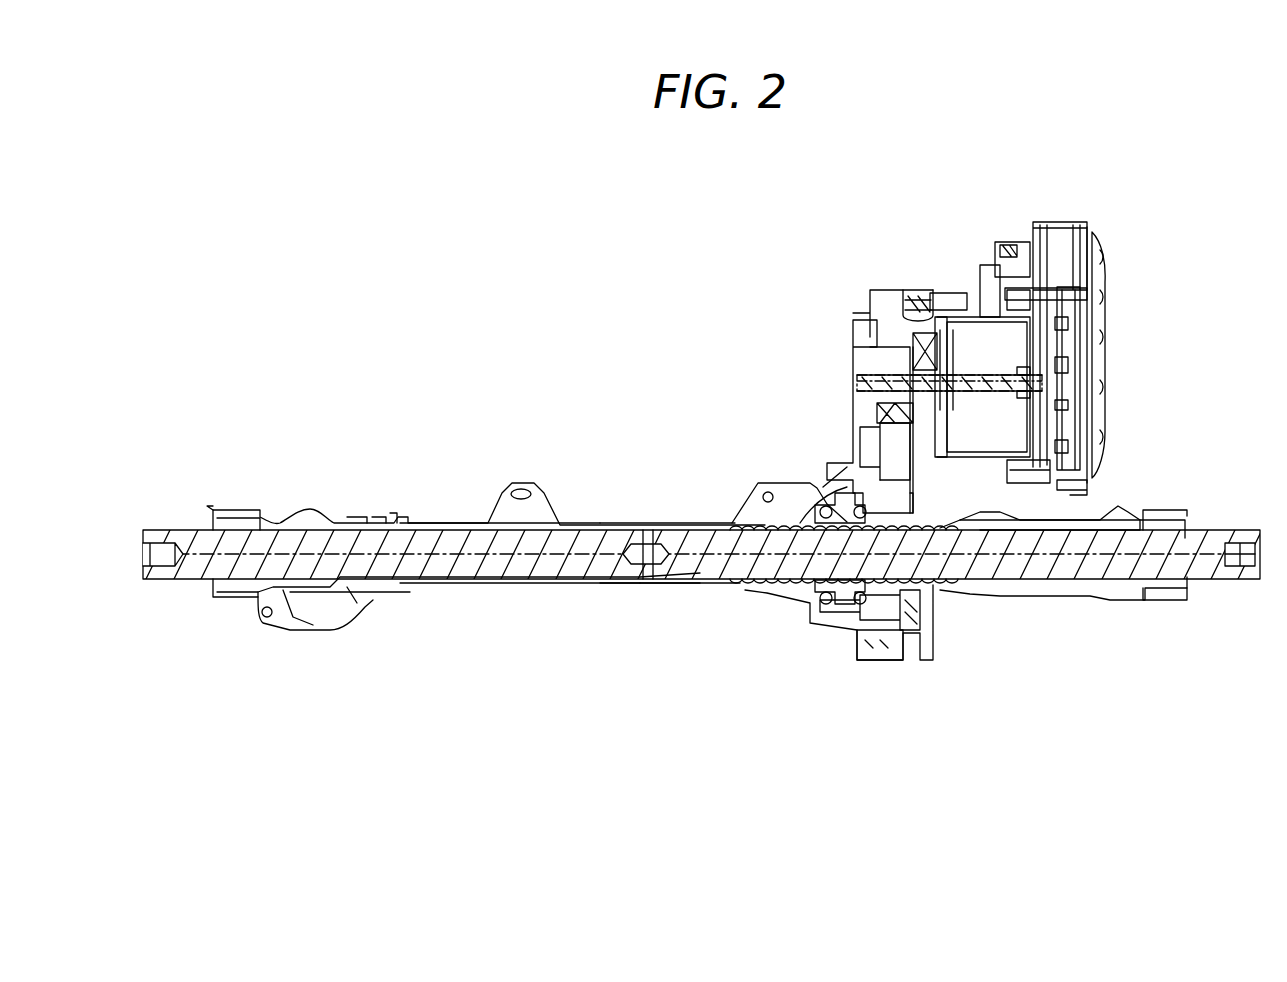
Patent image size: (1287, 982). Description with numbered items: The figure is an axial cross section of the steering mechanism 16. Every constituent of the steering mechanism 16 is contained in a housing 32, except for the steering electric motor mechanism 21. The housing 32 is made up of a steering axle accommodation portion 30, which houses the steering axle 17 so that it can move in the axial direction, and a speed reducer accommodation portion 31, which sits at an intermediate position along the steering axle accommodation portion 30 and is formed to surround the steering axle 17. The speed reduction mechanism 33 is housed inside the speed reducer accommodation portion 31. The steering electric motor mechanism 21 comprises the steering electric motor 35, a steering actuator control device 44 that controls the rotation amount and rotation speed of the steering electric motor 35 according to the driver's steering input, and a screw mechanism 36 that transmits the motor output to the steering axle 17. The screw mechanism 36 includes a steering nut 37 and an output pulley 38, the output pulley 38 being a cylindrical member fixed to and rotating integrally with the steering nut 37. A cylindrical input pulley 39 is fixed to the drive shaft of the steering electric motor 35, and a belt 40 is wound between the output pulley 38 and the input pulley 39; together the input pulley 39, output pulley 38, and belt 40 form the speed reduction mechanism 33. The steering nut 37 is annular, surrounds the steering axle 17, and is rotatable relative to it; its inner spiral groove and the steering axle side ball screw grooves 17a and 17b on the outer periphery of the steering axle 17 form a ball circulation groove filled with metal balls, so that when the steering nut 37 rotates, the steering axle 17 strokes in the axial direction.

The steering mechanism 16 is at (684, 452).
The steering axle 17 is at (449, 532).
The steering axle side ball screw groove 17a is at (739, 577).
The steering axle side ball screw groove 17b is at (992, 577).
The steering electric motor mechanism 21 is at (1107, 232).
The steering axle accommodation portion 30 is at (576, 532).
The speed reducer accommodation portion 31 is at (880, 294).
The housing 32 is at (621, 528).
The speed reduction mechanism 33 is at (890, 420).
The steering electric motor 35 is at (968, 329).
The screw mechanism 36 is at (917, 610).
The steering nut 37 is at (869, 515).
The output pulley 38 is at (883, 622).
The input pulley 39 is at (870, 368).
The belt 40 is at (908, 465).
The steering actuator control device 44 is at (1070, 420).